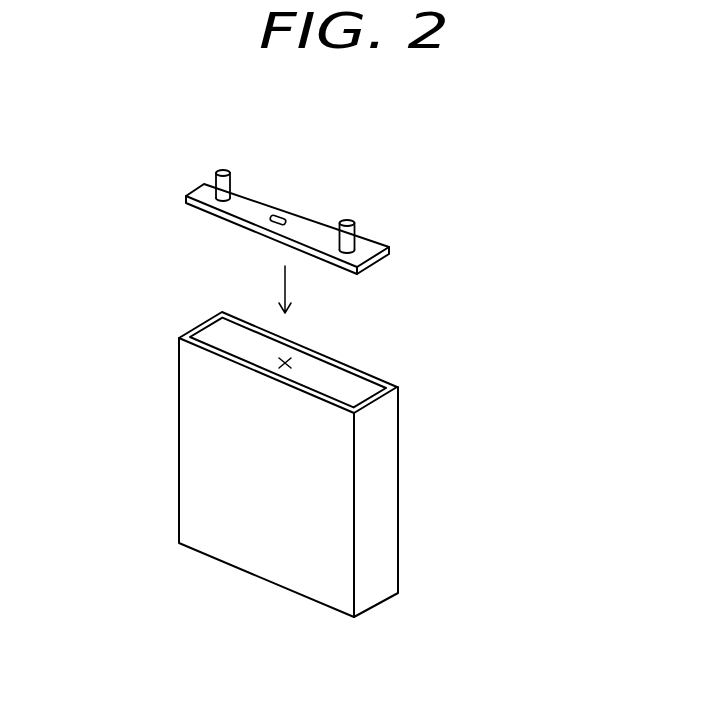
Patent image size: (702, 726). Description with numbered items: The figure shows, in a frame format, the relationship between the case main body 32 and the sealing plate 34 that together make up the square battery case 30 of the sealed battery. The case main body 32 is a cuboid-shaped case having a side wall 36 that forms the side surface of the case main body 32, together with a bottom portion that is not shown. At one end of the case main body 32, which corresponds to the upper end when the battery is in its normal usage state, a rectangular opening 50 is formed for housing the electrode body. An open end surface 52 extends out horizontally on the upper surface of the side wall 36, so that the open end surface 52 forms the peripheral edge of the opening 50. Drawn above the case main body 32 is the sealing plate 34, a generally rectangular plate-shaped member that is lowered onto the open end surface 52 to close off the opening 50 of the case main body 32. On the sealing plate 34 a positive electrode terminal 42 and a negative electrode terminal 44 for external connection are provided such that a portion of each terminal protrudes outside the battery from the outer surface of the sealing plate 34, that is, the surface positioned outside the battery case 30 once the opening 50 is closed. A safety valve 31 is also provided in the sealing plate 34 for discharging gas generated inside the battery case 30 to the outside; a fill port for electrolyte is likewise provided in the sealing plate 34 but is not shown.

The battery case 30 is at (296, 472).
The safety valve 31 is at (272, 215).
The case main body 32 is at (390, 563).
The sealing plate 34 is at (372, 241).
The side wall 36 is at (228, 480).
The positive electrode terminal 42 is at (223, 168).
The negative electrode terminal 44 is at (347, 221).
The opening 50 is at (292, 363).
The open end surface 52 is at (397, 387).